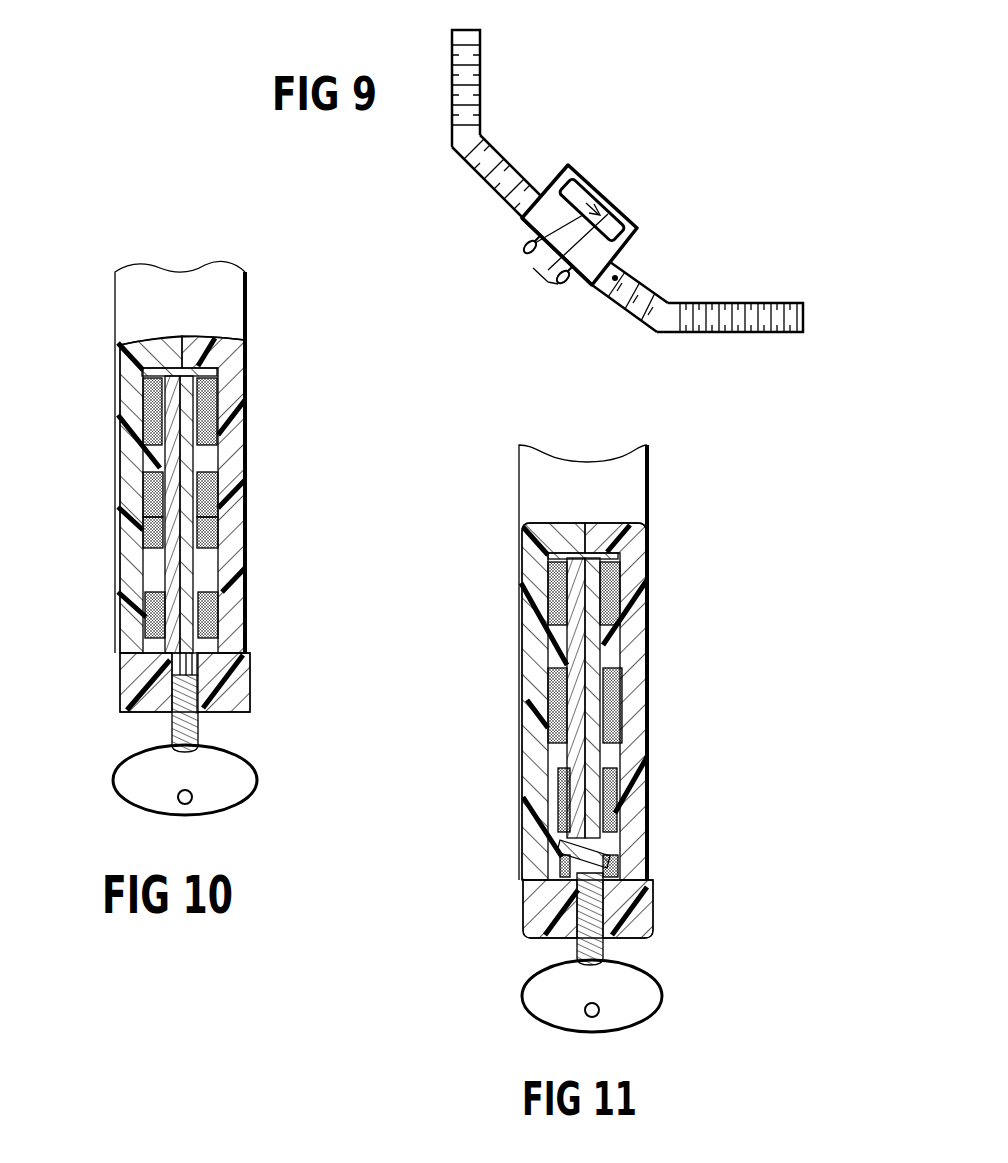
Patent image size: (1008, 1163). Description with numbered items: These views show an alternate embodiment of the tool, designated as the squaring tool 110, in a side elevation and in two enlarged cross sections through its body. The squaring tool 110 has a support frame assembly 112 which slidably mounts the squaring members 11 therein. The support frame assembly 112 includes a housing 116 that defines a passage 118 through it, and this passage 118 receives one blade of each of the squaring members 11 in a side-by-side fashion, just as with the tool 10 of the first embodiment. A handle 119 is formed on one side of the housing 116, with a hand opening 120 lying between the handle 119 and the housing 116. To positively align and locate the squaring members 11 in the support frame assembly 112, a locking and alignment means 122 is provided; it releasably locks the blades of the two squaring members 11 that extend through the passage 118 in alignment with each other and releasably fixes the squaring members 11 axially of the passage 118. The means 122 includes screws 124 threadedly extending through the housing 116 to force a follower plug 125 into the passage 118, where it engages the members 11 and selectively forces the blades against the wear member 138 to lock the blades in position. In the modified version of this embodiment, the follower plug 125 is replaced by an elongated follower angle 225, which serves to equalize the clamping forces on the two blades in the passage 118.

In FIG. 9, the tool 10 is at (550, 295).
In FIG. 10, the squaring members 11 is at (218, 510).
In FIG. 11, the squaring members 11 is at (605, 655).
In FIG. 9, the squaring tool 110 is at (506, 206).
In FIG. 10, the squaring tool 110 is at (250, 375).
In FIG. 11, the squaring tool 110 is at (662, 613).
In FIG. 9, the support frame assembly 112 is at (572, 161).
In FIG. 9, the housing 116 is at (524, 225).
In FIG. 10, the housing 116 is at (120, 393).
In FIG. 11, the housing 116 is at (652, 686).
In FIG. 10, the passage 118 is at (197, 456).
In FIG. 11, the passage 118 is at (565, 639).
In FIG. 9, the handle 119 is at (603, 196).
In FIG. 9, the hand opening 120 is at (578, 184).
In FIG. 10, the hand opening 120 is at (235, 291).
In FIG. 11, the hand opening 120 is at (640, 490).
In FIG. 9, the locking and alignment means 122 is at (520, 263).
In FIG. 10, the locking and alignment means 122 is at (226, 741).
In FIG. 10, the screws 124 is at (175, 724).
In FIG. 11, the screws 124 is at (604, 901).
In FIG. 10, the follower plug 125 is at (198, 668).
In FIG. 10, the wear member 138 is at (218, 373).
In FIG. 11, the wear member 138 is at (612, 551).
In FIG. 11, the elongated follower angle 225 is at (612, 858).